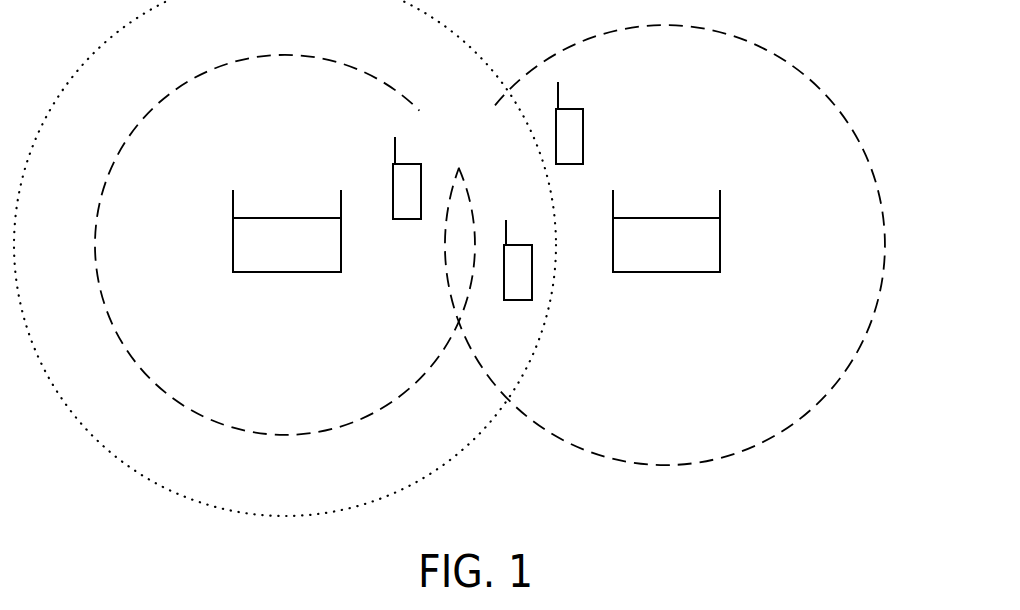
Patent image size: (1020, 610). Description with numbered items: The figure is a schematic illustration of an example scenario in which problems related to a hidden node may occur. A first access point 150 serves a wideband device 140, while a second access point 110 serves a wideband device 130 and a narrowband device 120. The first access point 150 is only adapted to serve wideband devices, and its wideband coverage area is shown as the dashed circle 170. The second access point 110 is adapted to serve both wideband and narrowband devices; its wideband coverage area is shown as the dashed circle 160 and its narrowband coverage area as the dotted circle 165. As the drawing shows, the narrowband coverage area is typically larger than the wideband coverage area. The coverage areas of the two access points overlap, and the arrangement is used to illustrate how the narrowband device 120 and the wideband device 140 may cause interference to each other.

The second access point (AP 2) 110 is at (287, 231).
The narrowband device (STA 1) 120 is at (532, 290).
The wideband device (STA 3) 130 is at (421, 207).
The wideband device (STA 2) 140 is at (583, 150).
The first access point (AP 1) 150 is at (666, 231).
The dashed circle (wideband coverage area of AP 2) 160 is at (178, 402).
The dotted circle (narrowband coverage area of AP 2) 165 is at (223, 508).
The dashed circle (wideband coverage area of AP 1) 170 is at (587, 443).